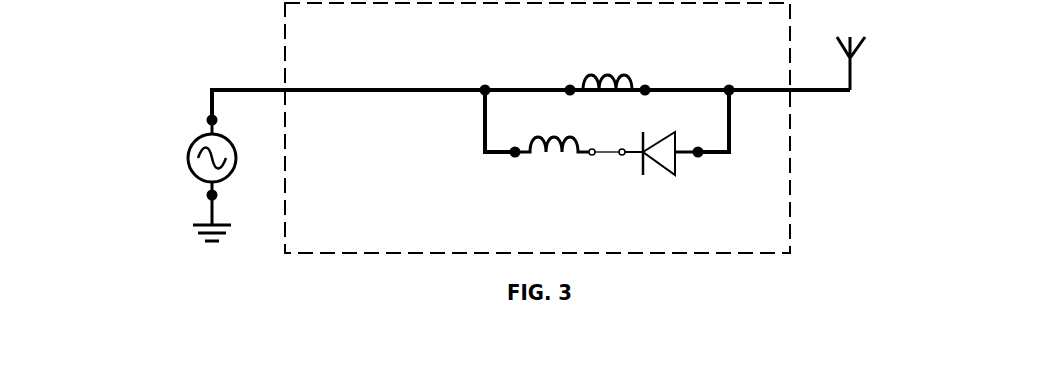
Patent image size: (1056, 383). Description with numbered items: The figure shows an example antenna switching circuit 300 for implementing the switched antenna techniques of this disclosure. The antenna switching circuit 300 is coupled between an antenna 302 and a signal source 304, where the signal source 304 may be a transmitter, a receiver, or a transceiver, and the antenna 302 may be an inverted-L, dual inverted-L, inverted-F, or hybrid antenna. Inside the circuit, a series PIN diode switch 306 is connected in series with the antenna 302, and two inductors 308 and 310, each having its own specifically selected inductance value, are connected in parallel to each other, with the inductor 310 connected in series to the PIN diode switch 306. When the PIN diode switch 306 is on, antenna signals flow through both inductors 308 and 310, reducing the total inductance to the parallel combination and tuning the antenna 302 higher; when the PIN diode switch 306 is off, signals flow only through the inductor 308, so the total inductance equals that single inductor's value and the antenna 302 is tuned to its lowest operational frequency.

The antenna switching circuit 300 is at (537, 128).
The antenna 302 is at (917, 63).
The signal source 304 is at (168, 135).
The PIN diode switch 306 is at (668, 195).
The inductor 308 is at (643, 56).
The inductor 310 is at (525, 175).